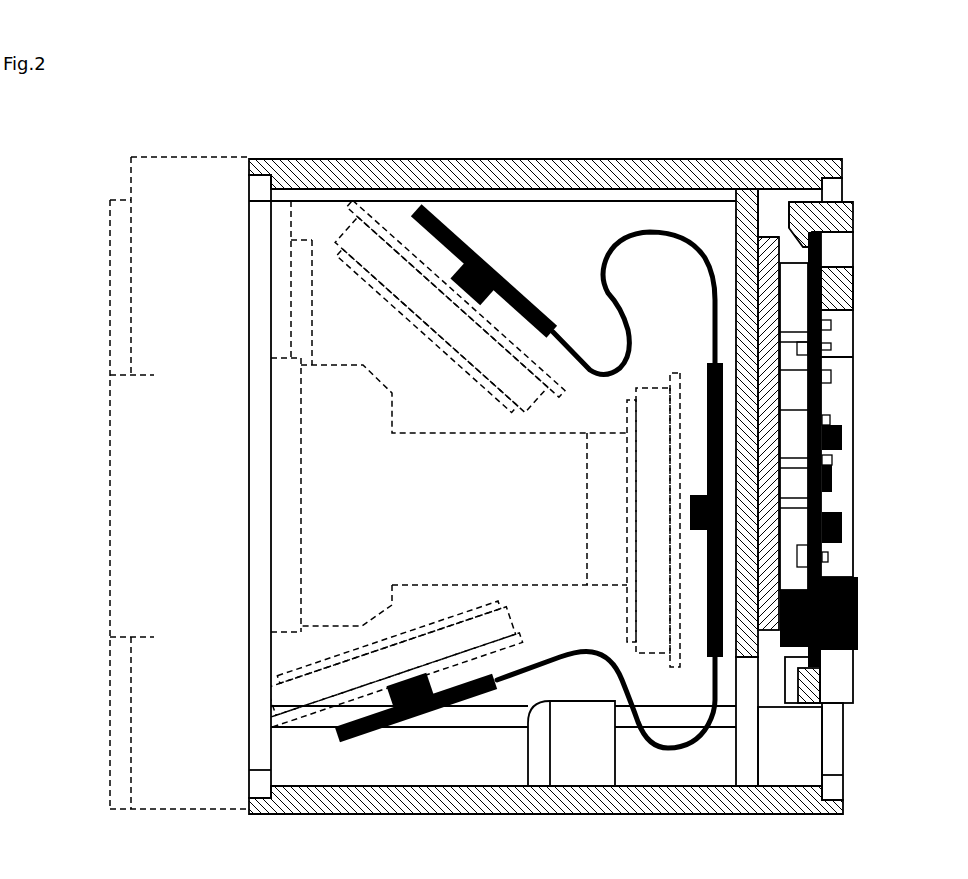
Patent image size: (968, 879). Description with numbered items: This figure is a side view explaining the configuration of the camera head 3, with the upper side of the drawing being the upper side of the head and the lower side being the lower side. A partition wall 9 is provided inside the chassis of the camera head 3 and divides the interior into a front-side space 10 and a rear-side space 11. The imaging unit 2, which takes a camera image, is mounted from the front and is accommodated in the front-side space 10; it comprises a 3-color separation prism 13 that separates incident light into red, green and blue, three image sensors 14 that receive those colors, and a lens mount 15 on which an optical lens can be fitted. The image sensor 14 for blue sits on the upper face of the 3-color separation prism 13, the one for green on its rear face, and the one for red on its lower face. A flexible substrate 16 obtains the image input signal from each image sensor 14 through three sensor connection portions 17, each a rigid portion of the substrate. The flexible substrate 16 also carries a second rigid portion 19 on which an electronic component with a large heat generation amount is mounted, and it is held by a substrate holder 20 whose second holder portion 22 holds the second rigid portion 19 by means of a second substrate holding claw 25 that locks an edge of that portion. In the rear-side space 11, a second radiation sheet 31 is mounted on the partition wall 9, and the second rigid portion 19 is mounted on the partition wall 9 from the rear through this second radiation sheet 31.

The imaging unit 2 is at (599, 594).
The camera head 3 is at (676, 110).
The partition wall 9 is at (732, 222).
The front-side space 10 is at (470, 768).
The rear-side space 11 is at (802, 742).
The 3-color separation prism 13 is at (318, 513).
The image sensors 14 is at (362, 250).
The lens mount 15 is at (194, 798).
The flexible substrate 16 is at (631, 225).
The sensor connection portions 17 is at (445, 222).
The second rigid portion 19 is at (838, 660).
The substrate holder 20 is at (862, 290).
The second holder portion 22 is at (845, 213).
The second substrate holding claw 25 is at (788, 212).
The second radiation sheet 31 is at (772, 612).